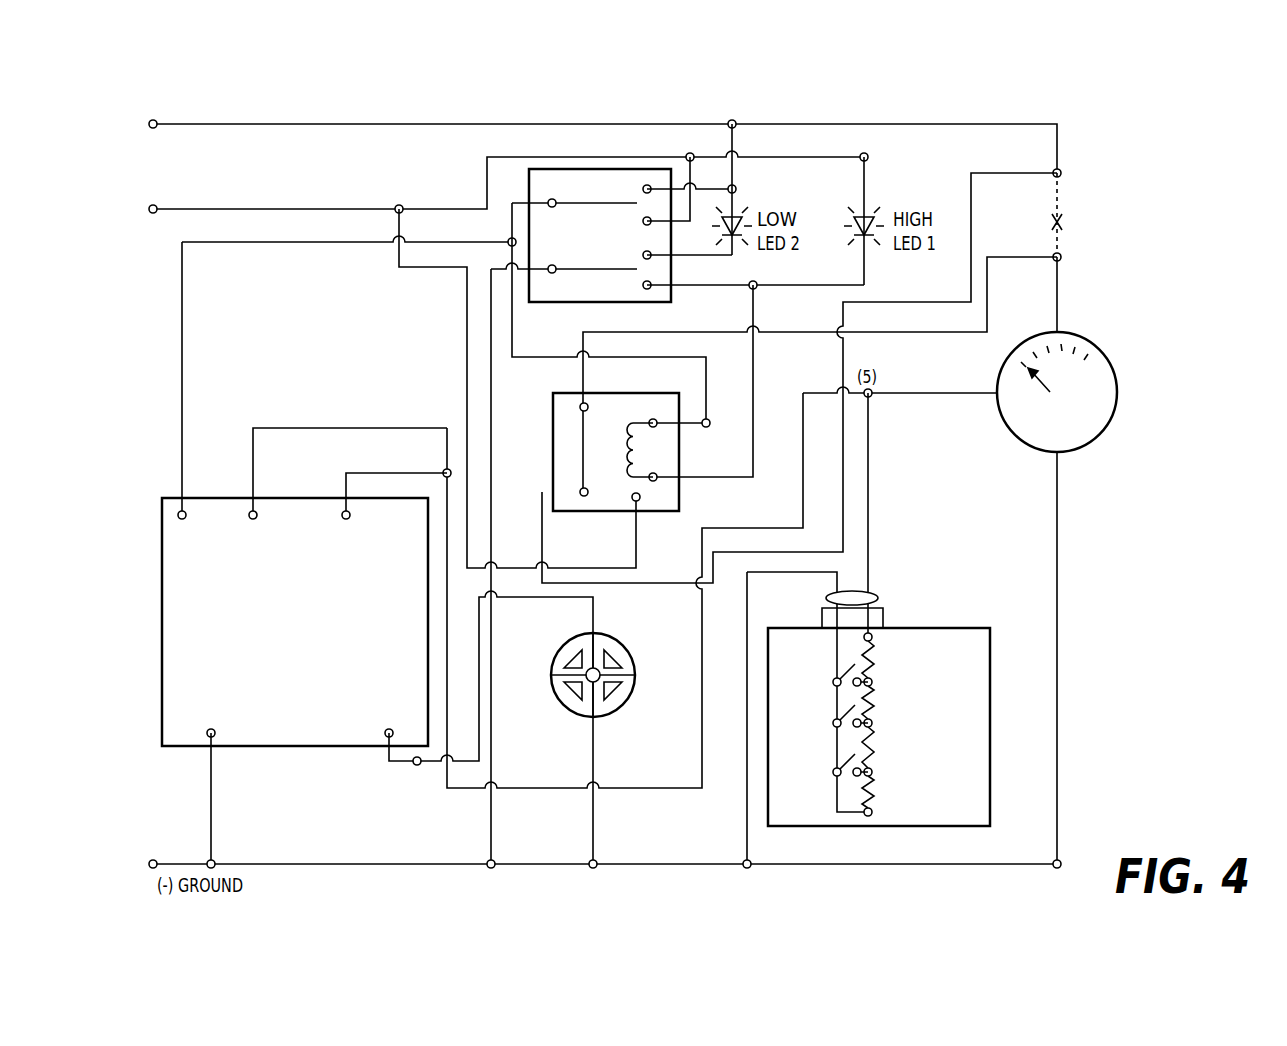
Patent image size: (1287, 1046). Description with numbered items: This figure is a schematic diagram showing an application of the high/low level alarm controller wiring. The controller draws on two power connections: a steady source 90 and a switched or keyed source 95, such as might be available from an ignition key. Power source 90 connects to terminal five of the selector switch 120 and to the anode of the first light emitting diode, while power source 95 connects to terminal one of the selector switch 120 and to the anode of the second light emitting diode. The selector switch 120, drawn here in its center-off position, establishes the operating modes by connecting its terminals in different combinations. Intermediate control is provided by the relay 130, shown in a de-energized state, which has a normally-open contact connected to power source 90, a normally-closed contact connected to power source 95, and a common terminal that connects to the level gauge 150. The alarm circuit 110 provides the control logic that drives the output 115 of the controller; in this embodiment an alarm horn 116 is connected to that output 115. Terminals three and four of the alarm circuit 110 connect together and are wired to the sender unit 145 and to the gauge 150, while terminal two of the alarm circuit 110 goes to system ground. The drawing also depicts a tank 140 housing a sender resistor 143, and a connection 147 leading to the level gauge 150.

The switched or keyed source 95 is at (605, 148).
The steady source 90 is at (508, 359).
The alarm circuit 110 is at (284, 658).
The output 115 is at (491, 727).
The alarm horn 116 is at (636, 665).
The selector switch 120 is at (596, 237).
The relay 130 is at (626, 416).
The fuel tank 140 is at (990, 716).
The sender resistor 143 is at (873, 660).
The level sending unit 145 is at (935, 580).
The connection to fuel gauge 147 is at (1073, 217).
The level gauge 150 is at (1085, 336).